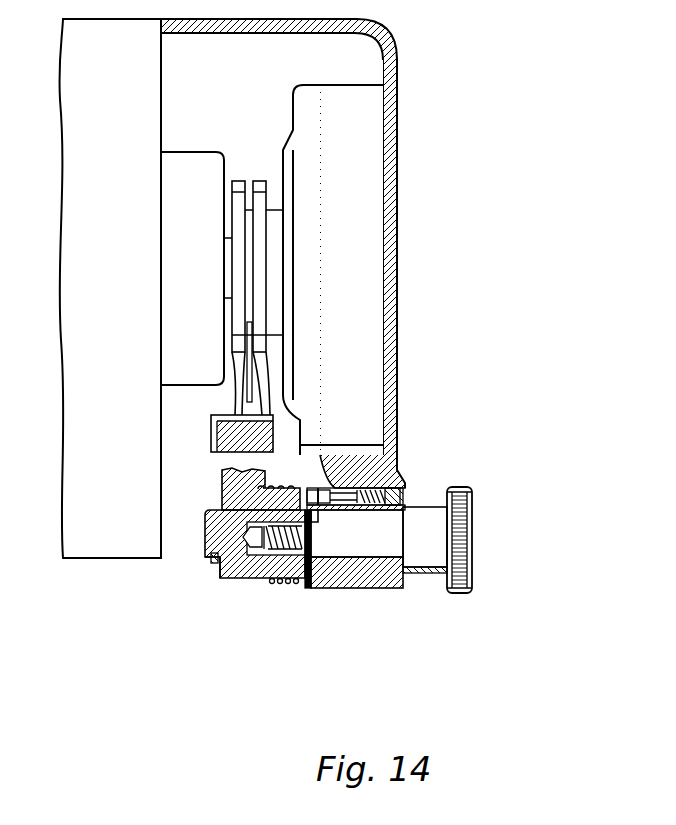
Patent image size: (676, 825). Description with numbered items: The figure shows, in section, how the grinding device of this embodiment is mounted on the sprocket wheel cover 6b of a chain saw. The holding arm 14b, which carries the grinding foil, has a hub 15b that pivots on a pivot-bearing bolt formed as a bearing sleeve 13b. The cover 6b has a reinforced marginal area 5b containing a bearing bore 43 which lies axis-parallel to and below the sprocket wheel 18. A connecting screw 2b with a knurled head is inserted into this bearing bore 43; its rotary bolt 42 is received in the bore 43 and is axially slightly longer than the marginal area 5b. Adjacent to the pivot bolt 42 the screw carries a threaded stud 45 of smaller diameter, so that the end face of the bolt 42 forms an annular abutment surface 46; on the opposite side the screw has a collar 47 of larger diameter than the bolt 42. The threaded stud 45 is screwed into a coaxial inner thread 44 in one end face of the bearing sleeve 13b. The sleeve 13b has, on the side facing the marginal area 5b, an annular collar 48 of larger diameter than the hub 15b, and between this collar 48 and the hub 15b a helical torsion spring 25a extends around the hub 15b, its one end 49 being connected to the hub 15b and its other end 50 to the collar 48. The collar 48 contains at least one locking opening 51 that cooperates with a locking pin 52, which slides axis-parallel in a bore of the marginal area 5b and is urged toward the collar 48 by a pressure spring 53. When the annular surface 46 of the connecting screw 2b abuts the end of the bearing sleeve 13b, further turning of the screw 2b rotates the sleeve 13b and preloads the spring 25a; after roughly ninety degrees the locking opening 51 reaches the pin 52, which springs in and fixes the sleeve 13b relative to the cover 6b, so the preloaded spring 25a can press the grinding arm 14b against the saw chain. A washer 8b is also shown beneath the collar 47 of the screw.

The sprocket wheel cover 6b is at (389, 174).
The sprocket wheel 18 is at (241, 183).
The holding arm 14b is at (217, 432).
The end of helical torsion spring 49 is at (265, 489).
The helical torsion spring 25a is at (290, 488).
The reinforced marginal area 5b is at (398, 470).
The locking pin 52 is at (333, 490).
The pressure spring 53 is at (402, 490).
The annular collar 48 is at (320, 487).
The bearing bore 43 is at (352, 578).
The inner thread 44 is at (262, 556).
The threaded stud 45 is at (290, 556).
The bearing sleeve 13b is at (210, 560).
The hub 15b is at (222, 578).
The other end of helical torsion spring 50 is at (288, 585).
The annular surface 46 is at (307, 588).
The locking opening 51 is at (316, 513).
The rotary bolt 42 is at (375, 556).
The collar 47 is at (435, 524).
The washer 8b is at (403, 573).
The connecting screw 2b is at (474, 556).